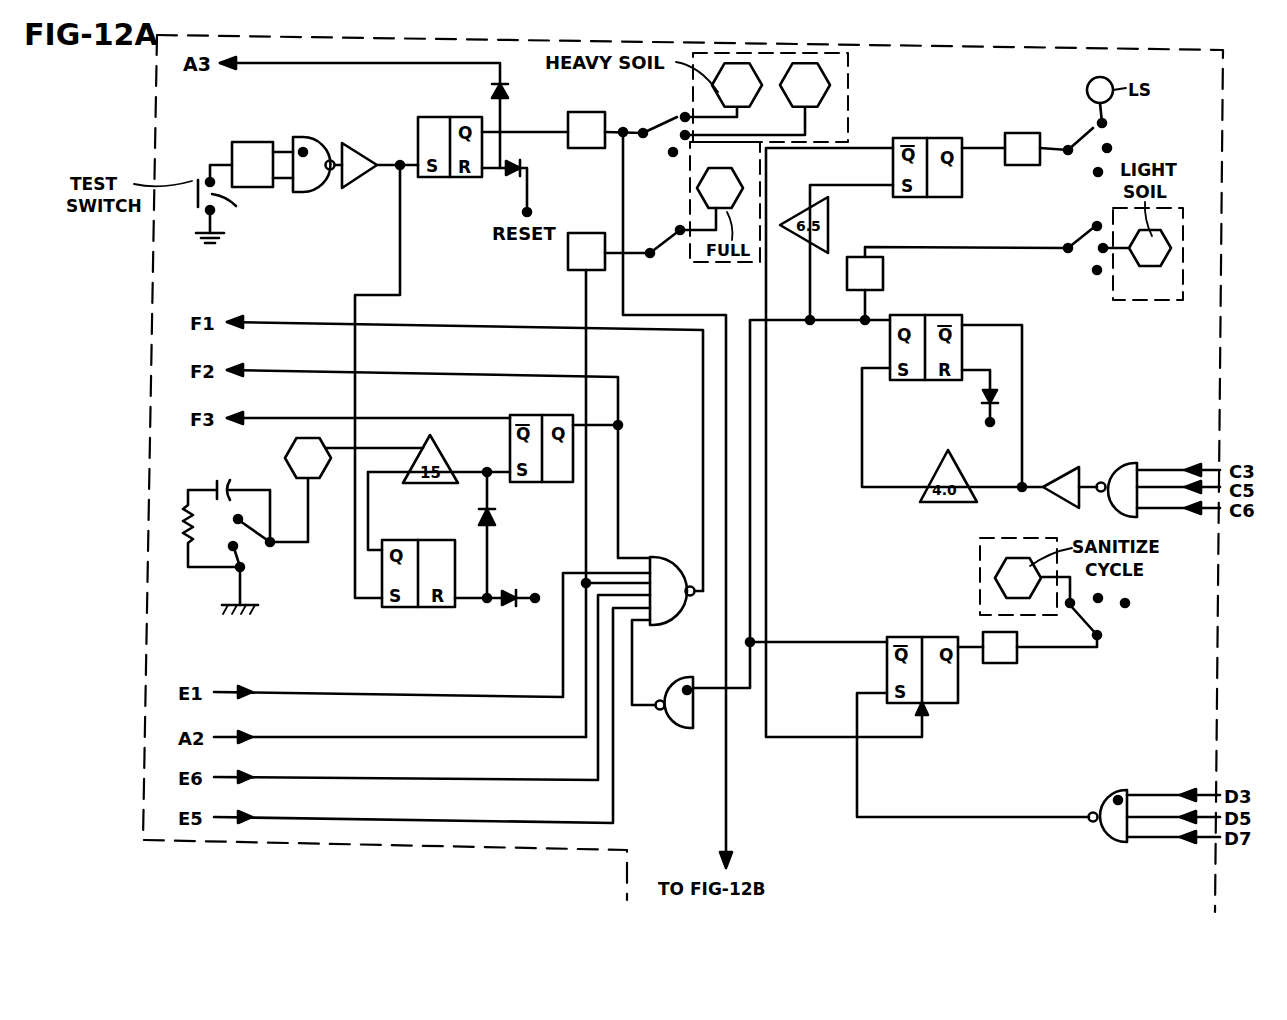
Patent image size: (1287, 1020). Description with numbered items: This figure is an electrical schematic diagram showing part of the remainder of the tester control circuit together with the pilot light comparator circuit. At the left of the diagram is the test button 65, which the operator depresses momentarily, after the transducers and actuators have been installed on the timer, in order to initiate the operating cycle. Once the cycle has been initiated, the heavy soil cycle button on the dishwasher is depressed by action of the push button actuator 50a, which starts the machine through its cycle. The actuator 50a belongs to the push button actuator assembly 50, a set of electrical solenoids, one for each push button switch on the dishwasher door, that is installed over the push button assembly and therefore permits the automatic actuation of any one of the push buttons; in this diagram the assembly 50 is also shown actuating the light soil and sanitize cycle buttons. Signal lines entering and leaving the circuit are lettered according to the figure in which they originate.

The test button 65 is at (225, 204).
The push button actuator 50a is at (692, 97).
The push button actuator assembly 50 is at (1148, 300).